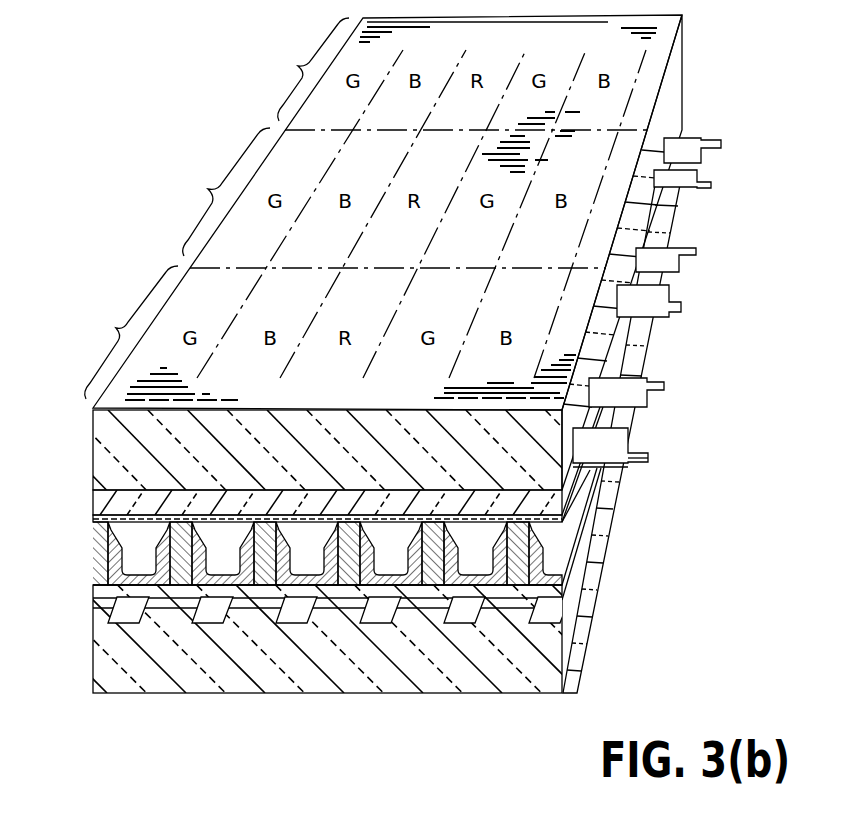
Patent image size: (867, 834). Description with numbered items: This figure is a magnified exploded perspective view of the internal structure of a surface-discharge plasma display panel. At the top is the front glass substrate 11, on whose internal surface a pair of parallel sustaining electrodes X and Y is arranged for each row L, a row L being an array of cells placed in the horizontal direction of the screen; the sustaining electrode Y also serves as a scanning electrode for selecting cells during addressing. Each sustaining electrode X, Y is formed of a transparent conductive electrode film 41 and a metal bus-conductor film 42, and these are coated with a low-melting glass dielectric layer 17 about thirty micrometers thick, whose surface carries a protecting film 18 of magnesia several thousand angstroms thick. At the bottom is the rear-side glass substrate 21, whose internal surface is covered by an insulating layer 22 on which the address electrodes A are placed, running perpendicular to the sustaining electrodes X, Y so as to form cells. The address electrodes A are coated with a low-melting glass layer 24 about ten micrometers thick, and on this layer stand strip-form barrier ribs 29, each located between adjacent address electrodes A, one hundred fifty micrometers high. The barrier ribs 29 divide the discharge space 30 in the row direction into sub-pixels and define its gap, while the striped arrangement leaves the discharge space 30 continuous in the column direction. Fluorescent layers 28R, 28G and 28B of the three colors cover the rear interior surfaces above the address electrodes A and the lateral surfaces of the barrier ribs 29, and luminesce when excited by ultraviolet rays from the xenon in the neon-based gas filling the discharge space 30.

The front glass substrate 11 is at (100, 460).
The dielectric layer 17 is at (100, 502).
The protecting film 18 is at (100, 518).
The rear-side glass substrate 21 is at (100, 667).
The insulating layer 22 is at (100, 601).
The low-melting glass layer 24 is at (100, 592).
The fluorescent layer 28B is at (247, 585).
The fluorescent layer 28G is at (411, 585).
The fluorescent layer 28R is at (342, 585).
The barrier rib 29 is at (171, 585).
The discharge space 30 is at (557, 554).
The transparent conductive electrode film 41 is at (601, 469).
The metal film 42 is at (641, 466).
The address electrode A is at (203, 623).
The sustaining electrode X is at (673, 181).
The sustaining electrode Y is at (693, 142).
The row L is at (217, 208).